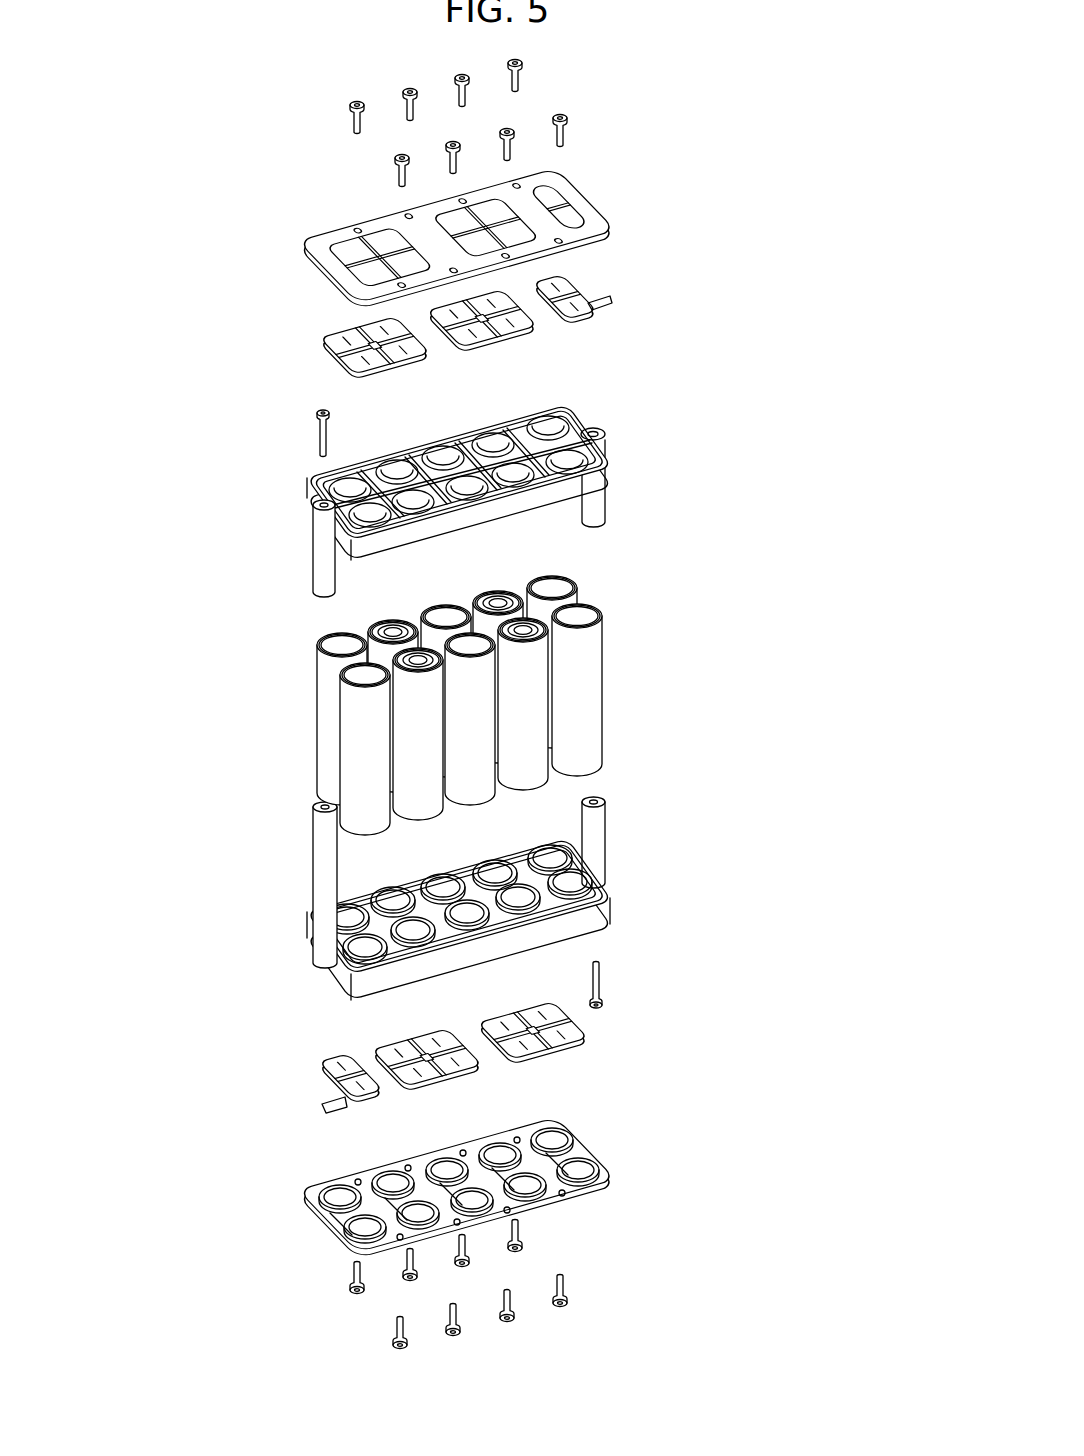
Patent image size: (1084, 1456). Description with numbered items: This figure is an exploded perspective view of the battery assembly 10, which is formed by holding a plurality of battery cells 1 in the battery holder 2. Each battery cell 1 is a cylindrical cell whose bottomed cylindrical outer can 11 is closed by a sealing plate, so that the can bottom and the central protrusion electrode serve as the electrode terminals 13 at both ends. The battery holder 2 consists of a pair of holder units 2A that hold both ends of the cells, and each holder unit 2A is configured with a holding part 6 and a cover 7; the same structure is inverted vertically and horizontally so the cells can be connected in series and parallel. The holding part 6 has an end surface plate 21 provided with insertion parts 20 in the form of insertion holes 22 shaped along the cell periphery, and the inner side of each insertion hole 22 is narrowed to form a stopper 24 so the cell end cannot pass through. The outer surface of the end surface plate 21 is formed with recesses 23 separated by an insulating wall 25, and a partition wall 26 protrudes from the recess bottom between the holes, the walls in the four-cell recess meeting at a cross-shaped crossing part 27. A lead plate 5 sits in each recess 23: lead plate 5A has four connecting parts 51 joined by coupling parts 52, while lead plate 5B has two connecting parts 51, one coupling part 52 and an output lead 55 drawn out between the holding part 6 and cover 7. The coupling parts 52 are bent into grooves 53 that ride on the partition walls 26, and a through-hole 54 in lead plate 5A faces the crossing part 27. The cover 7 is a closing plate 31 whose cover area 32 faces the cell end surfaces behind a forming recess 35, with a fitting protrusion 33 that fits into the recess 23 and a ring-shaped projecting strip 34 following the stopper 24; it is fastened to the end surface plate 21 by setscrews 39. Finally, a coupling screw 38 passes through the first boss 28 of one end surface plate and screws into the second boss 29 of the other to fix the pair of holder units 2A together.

The battery cell 1 is at (295, 717).
The battery holder 2 is at (809, 257).
The holder unit 2A is at (741, 1068).
The lead plate 5 is at (201, 965).
The lead plate 5A is at (364, 1017).
The lead plate 5B is at (300, 1071).
The holding part 6 is at (657, 865).
The cover 7 is at (623, 1116).
The battery assembly 10 is at (685, 108).
The outer can 11 is at (353, 800).
The electrode terminal 13 is at (332, 640).
The insertion part 20 is at (583, 883).
The end surface plate 21 is at (610, 908).
The insertion hole 22 is at (458, 904).
The recess 23 is at (433, 507).
The stopper 24 is at (548, 837).
The insulating wall 25 is at (556, 430).
The partition wall 26 is at (373, 470).
The crossing part 27 is at (487, 457).
The first boss 28 is at (323, 560).
The second boss 29 is at (320, 897).
The closing plate 31 is at (517, 1207).
The cover area 32 is at (572, 1172).
The fitting protrusion 33 is at (565, 1195).
The ring-shaped projecting strip 34 is at (603, 1158).
The forming recess 35 is at (317, 260).
The coupling screw 38 is at (318, 430).
The setscrew 39 is at (352, 1283).
The connecting part 51 is at (343, 372).
The coupling part 52 is at (330, 350).
The groove 53 is at (450, 1090).
The through-hole 54 is at (433, 1063).
The output lead 55 is at (333, 1110).